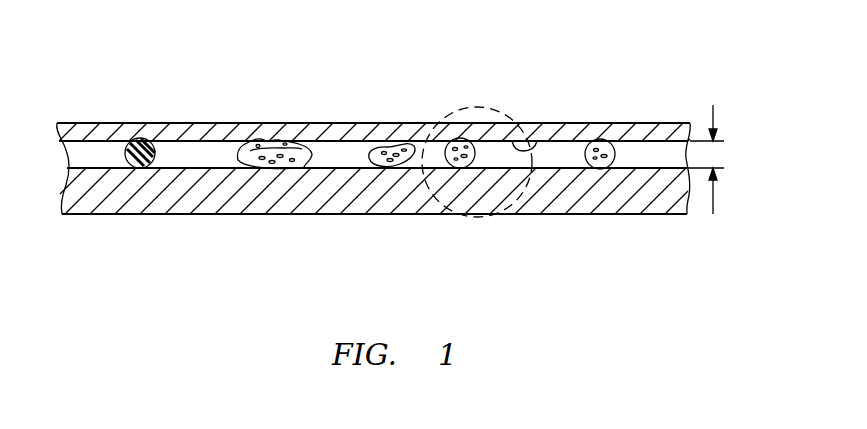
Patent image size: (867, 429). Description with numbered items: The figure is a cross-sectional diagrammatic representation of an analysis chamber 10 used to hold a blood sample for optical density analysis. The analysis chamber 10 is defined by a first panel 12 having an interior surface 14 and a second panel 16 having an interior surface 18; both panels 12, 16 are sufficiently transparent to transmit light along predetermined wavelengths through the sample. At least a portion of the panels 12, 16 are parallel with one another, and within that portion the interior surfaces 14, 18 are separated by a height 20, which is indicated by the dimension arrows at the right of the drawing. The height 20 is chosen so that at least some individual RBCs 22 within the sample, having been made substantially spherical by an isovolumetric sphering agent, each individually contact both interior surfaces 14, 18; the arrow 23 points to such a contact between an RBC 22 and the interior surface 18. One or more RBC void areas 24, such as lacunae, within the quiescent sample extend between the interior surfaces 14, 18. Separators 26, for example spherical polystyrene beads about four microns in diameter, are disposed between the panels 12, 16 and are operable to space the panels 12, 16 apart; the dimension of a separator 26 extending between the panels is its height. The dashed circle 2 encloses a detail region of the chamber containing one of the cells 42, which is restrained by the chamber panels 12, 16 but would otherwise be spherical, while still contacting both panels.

The detail region 2 is at (476, 107).
The analysis chamber 10 is at (325, 153).
The first panel 12 is at (354, 123).
The interior surface 14 is at (532, 141).
The second panel 16 is at (203, 214).
The interior surface 18 is at (492, 168).
The height 20 is at (713, 105).
The RBCs 22 is at (263, 143).
The particle contact 23 is at (267, 168).
The RBC void area 24 is at (573, 155).
The separator 26 is at (137, 140).
The cells 42 is at (449, 139).